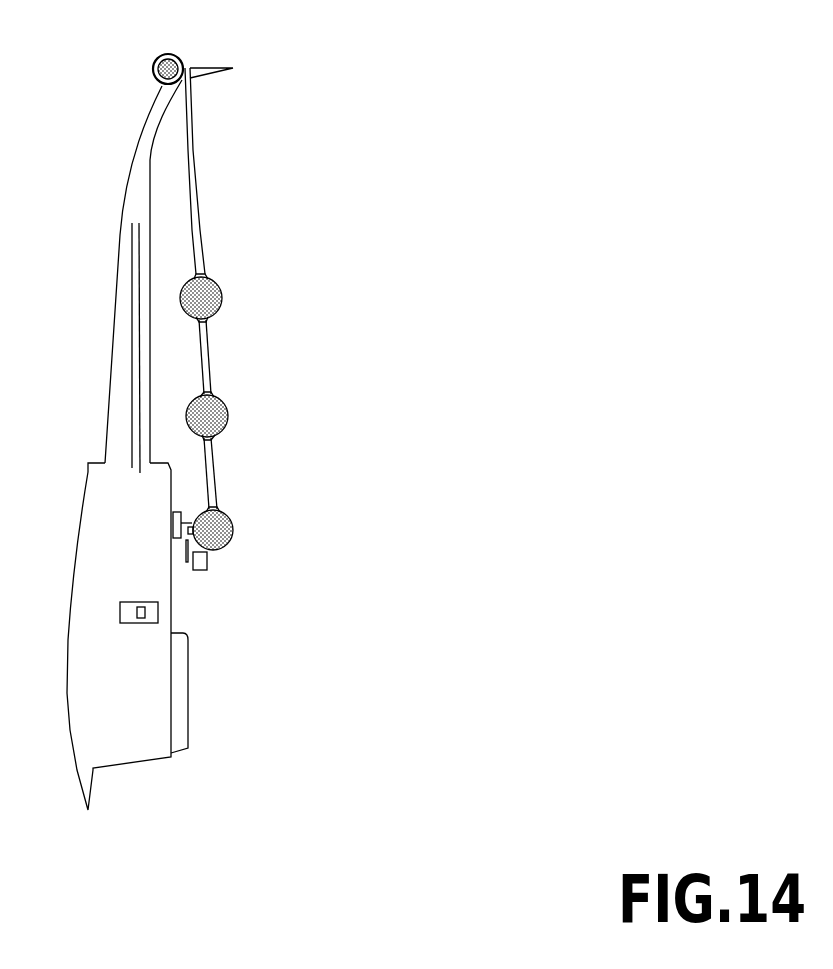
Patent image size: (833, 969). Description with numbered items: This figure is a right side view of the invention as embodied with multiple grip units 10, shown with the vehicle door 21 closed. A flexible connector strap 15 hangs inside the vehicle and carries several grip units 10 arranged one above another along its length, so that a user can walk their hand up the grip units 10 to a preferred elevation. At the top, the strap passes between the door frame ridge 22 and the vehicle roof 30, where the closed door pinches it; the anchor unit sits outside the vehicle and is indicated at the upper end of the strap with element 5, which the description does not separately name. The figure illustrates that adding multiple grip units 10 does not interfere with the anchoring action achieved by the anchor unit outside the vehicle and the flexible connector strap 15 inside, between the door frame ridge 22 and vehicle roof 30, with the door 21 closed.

The ring 5 is at (155, 62).
The grip unit 10 is at (230, 300).
The flexible connector strap 15 is at (201, 193).
The vehicle door 21 is at (137, 636).
The door frame ridge 22 is at (155, 87).
The vehicle roof 30 is at (243, 67).